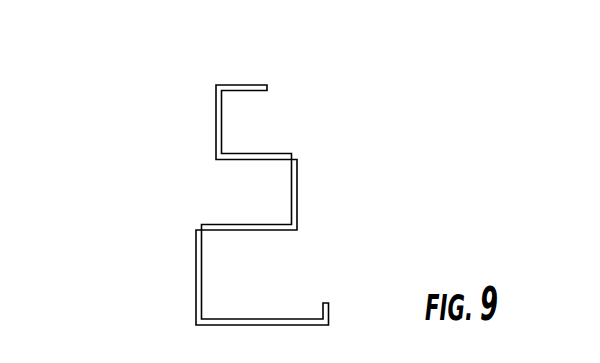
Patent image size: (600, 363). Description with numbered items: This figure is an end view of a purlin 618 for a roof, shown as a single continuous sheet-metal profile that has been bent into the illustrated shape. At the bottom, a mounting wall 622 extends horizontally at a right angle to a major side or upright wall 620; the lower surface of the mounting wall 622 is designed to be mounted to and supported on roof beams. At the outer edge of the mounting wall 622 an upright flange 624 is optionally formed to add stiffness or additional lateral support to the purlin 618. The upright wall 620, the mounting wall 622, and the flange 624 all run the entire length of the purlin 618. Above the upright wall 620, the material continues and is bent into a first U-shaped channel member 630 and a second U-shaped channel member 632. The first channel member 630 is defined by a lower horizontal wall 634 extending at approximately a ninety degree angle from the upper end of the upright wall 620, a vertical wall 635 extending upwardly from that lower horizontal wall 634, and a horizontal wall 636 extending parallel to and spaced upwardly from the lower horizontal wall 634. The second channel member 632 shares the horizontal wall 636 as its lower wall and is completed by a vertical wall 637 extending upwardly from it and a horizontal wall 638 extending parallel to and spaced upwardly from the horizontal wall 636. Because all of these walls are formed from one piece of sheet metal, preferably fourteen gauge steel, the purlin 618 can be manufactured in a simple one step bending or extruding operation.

The purlin 618 is at (80, 196).
The upright wall 620 is at (196, 295).
The mounting wall 622 is at (259, 319).
The upright flange 624 is at (328, 317).
The first U-shaped channel member 630 is at (222, 202).
The second U-shaped channel member 632 is at (276, 106).
The lower horizontal wall 634 is at (272, 230).
The vertical wall 635 is at (297, 202).
The horizontal wall 636 is at (277, 153).
The vertical wall 637 is at (216, 128).
The horizontal wall 638 is at (247, 85).